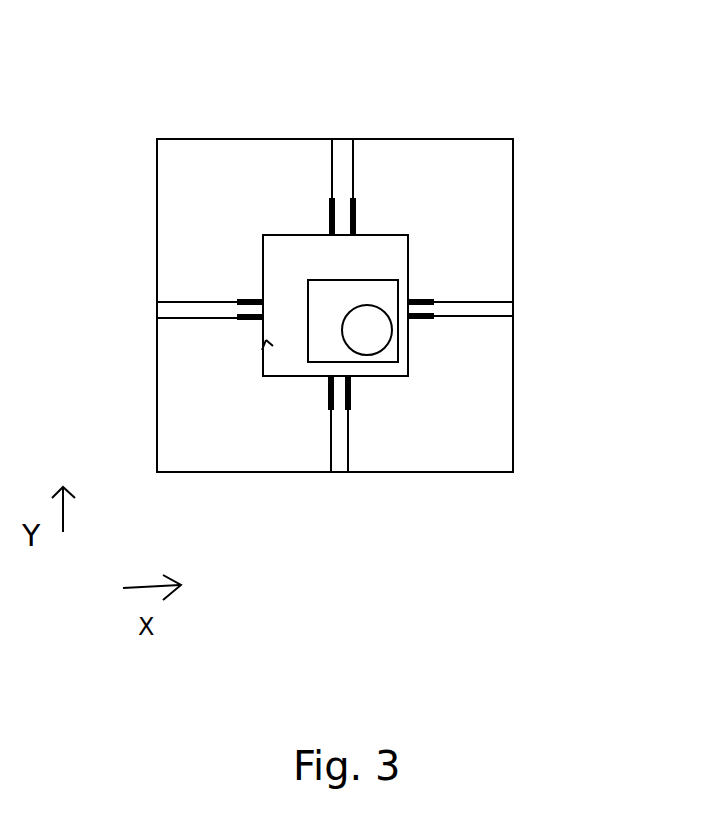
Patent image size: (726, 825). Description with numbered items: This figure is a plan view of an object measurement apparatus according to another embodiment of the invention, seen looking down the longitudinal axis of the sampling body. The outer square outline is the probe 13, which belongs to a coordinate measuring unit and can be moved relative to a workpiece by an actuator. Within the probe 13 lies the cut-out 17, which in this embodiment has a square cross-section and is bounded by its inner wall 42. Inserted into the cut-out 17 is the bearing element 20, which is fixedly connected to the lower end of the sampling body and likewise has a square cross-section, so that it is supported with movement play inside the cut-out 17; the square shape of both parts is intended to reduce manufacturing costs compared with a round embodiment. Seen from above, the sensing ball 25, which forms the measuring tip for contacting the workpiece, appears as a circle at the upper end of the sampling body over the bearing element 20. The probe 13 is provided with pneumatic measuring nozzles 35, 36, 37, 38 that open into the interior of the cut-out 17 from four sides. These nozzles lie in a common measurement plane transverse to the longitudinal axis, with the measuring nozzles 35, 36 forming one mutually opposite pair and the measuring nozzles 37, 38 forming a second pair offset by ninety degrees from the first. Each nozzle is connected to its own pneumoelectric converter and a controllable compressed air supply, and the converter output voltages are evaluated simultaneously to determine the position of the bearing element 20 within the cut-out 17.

The probe 13 is at (245, 445).
The cut-out 17 is at (282, 253).
The bearing element 20 is at (335, 297).
The sensing ball 25 is at (367, 330).
The measuring nozzle 35 is at (181, 307).
The measuring nozzle 36 is at (475, 306).
The measuring nozzle 37 is at (343, 433).
The measuring nozzle 38 is at (342, 170).
The inner wall 42 is at (266, 340).